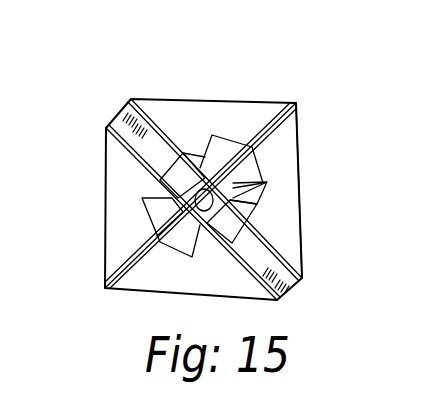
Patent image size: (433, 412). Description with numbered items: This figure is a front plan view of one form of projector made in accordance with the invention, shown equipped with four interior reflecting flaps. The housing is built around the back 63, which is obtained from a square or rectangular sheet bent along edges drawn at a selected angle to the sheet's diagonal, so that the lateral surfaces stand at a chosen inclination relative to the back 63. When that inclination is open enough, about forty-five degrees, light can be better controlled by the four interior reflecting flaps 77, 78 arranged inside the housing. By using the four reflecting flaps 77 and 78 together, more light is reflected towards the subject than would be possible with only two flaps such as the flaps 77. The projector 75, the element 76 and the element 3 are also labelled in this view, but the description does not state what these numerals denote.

The hub 3 is at (160, 188).
The back 63 is at (105, 125).
The housing 75 is at (199, 98).
The housing wall 76 is at (282, 155).
The interior reflecting flap 77 is at (168, 163).
The interior reflecting flap 78 is at (237, 144).